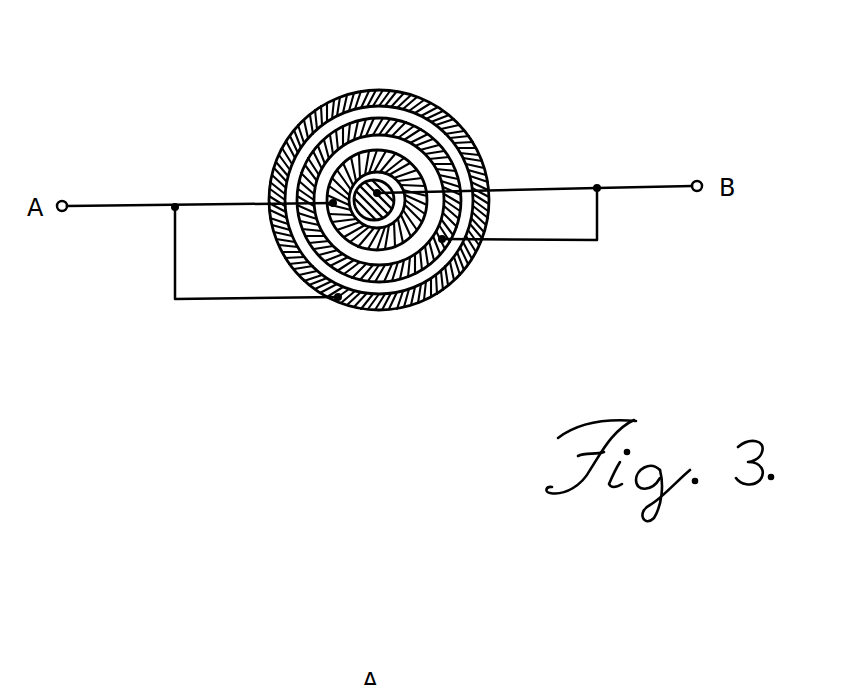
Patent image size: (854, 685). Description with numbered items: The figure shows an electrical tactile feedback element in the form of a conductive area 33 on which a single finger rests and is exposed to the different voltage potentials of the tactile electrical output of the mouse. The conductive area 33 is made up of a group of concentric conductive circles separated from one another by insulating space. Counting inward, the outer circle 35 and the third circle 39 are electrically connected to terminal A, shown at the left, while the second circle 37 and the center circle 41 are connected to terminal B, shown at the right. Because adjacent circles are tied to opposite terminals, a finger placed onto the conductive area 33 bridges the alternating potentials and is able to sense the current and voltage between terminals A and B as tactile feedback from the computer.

The conductive area 33 is at (513, 145).
The circle 35 is at (293, 133).
The circle 37 is at (445, 140).
The circle 39 is at (368, 150).
The center circle 41 is at (377, 222).